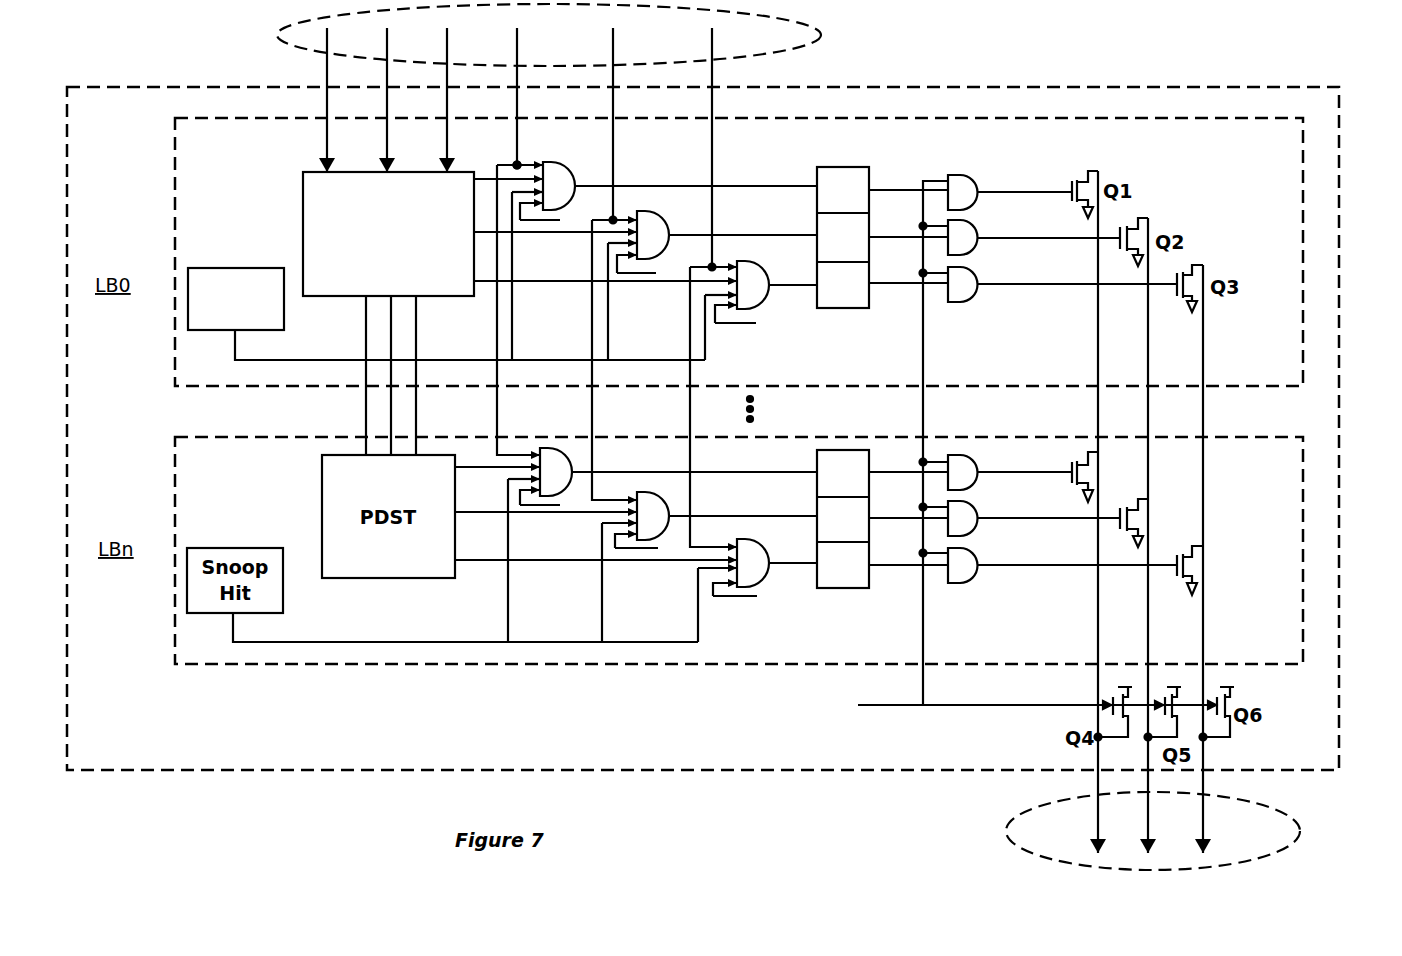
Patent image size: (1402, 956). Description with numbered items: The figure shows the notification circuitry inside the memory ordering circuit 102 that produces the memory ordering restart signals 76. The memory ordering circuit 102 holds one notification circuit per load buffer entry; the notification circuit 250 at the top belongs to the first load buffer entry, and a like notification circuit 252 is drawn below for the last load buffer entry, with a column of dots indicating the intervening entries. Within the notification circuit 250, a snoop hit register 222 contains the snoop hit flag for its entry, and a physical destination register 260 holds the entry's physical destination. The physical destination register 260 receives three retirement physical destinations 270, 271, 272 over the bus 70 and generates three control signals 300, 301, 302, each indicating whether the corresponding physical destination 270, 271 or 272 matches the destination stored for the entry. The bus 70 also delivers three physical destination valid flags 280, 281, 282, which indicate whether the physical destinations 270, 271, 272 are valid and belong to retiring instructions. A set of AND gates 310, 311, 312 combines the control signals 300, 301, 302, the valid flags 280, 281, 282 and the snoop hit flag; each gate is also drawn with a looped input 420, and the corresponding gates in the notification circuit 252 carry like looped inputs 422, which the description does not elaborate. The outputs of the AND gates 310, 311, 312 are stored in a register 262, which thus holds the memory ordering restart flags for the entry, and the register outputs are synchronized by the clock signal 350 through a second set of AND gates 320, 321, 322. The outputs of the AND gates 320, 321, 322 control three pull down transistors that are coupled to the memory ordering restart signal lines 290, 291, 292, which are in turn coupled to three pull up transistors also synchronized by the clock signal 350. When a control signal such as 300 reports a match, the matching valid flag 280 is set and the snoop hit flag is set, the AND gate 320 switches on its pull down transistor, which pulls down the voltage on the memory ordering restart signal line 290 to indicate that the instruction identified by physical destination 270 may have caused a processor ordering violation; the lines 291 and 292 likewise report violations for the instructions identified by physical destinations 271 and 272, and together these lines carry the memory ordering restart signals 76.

The bus 70 is at (821, 35).
The physical destination 270 is at (327, 50).
The physical destination 271 is at (387, 50).
The physical destination 272 is at (447, 50).
The physical destination valid flag 280 is at (517, 50).
The physical destination valid flag 281 is at (613, 50).
The physical destination valid flag 282 is at (712, 50).
The memory ordering circuit 102 is at (1340, 470).
The notification circuit 250 is at (1250, 388).
The line buffer LBn 252 is at (400, 665).
The snoop hit register 222 is at (236, 268).
The physical destination (PDST) register 260 is at (388, 234).
The control signal 300 is at (483, 172).
The control signal 301 is at (527, 234).
The control signal 302 is at (527, 283).
The AND gate 310 is at (556, 162).
The AND gate 311 is at (652, 211).
The AND gate 312 is at (752, 261).
The feedback signal 420 is at (552, 222).
The register 262 is at (843, 309).
The AND gate 320 is at (980, 178).
The AND gate 321 is at (980, 224).
The AND gate 322 is at (980, 271).
The clock signal 350 is at (890, 705).
The memory ordering restart signal line 290 is at (1098, 826).
The memory ordering restart signal line 291 is at (1148, 832).
The memory ordering restart signal line 292 is at (1204, 822).
The memory ordering restart signals 76 is at (1300, 831).
The feedback signal 422 is at (556, 507).